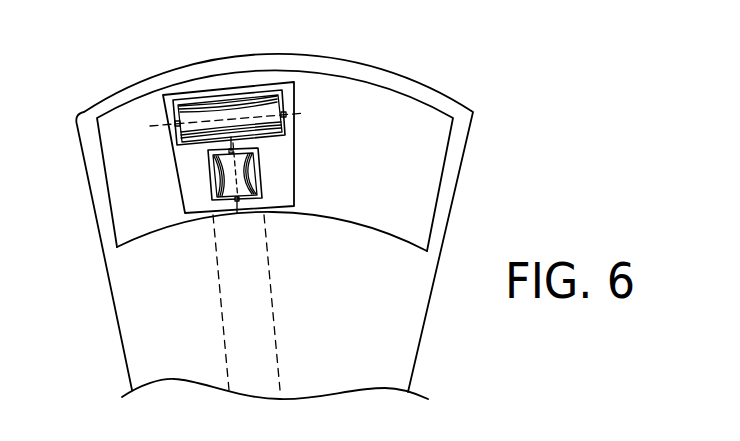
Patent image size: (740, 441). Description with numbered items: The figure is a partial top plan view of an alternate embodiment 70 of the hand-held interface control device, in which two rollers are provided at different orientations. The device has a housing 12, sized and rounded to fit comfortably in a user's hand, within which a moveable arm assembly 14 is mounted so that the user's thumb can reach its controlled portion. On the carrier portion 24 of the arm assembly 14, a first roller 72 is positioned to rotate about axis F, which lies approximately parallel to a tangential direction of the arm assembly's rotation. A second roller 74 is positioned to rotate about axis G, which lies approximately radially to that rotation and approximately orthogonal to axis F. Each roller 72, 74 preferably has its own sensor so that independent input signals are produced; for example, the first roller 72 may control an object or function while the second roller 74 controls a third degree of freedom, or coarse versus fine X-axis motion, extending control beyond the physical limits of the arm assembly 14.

The housing 12 is at (408, 348).
The arm assembly 14 is at (201, 251).
The carrier portion 24 is at (283, 178).
The alternate embodiment 70 is at (360, 110).
The first roller 72 is at (247, 111).
The second roller 74 is at (240, 170).
The axis F is at (236, 115).
The axis G is at (241, 237).